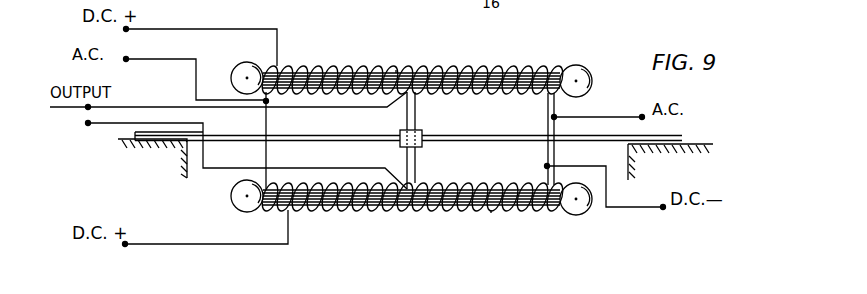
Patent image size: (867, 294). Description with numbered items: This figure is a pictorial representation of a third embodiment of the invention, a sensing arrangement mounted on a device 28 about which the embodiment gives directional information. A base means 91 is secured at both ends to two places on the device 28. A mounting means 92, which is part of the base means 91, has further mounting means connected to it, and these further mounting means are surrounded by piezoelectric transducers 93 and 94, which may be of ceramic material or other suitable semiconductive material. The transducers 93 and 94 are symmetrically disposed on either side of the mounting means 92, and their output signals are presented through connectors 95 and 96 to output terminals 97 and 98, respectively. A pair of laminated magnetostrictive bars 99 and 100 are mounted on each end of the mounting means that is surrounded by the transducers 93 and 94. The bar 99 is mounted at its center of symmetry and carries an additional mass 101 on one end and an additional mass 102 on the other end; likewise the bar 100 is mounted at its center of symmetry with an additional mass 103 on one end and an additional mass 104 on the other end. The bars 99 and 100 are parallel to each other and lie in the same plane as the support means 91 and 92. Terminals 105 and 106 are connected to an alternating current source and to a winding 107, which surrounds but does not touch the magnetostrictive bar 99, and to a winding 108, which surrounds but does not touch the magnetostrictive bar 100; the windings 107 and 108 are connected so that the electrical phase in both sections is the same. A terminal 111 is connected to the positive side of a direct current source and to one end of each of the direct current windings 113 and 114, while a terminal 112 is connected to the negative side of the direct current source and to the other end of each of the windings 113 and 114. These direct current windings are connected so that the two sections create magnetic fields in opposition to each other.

The device 28 is at (118, 139).
The base means 91 is at (304, 134).
The mounting means 92 is at (424, 131).
The piezoelectric transducer 93 is at (416, 102).
The piezoelectric transducer 94 is at (407, 156).
The connector 95 is at (161, 92).
The connector 96 is at (203, 128).
The output terminal 97 is at (58, 111).
The output terminal 98 is at (88, 123).
The laminated magnetostrictive bar 99 is at (338, 64).
The laminated magnetostrictive bar 100 is at (366, 211).
The additional mass 101 is at (256, 62).
The additional mass 102 is at (578, 68).
The additional mass 103 is at (247, 211).
The additional mass 104 is at (578, 213).
The terminal 105 is at (126, 59).
The terminal 106 is at (642, 117).
The winding 107 is at (396, 72).
The winding 108 is at (491, 212).
The terminal 111 is at (126, 29).
The terminal 112 is at (663, 207).
The direct current winding 113 is at (342, 66).
The direct current winding 114 is at (438, 183).